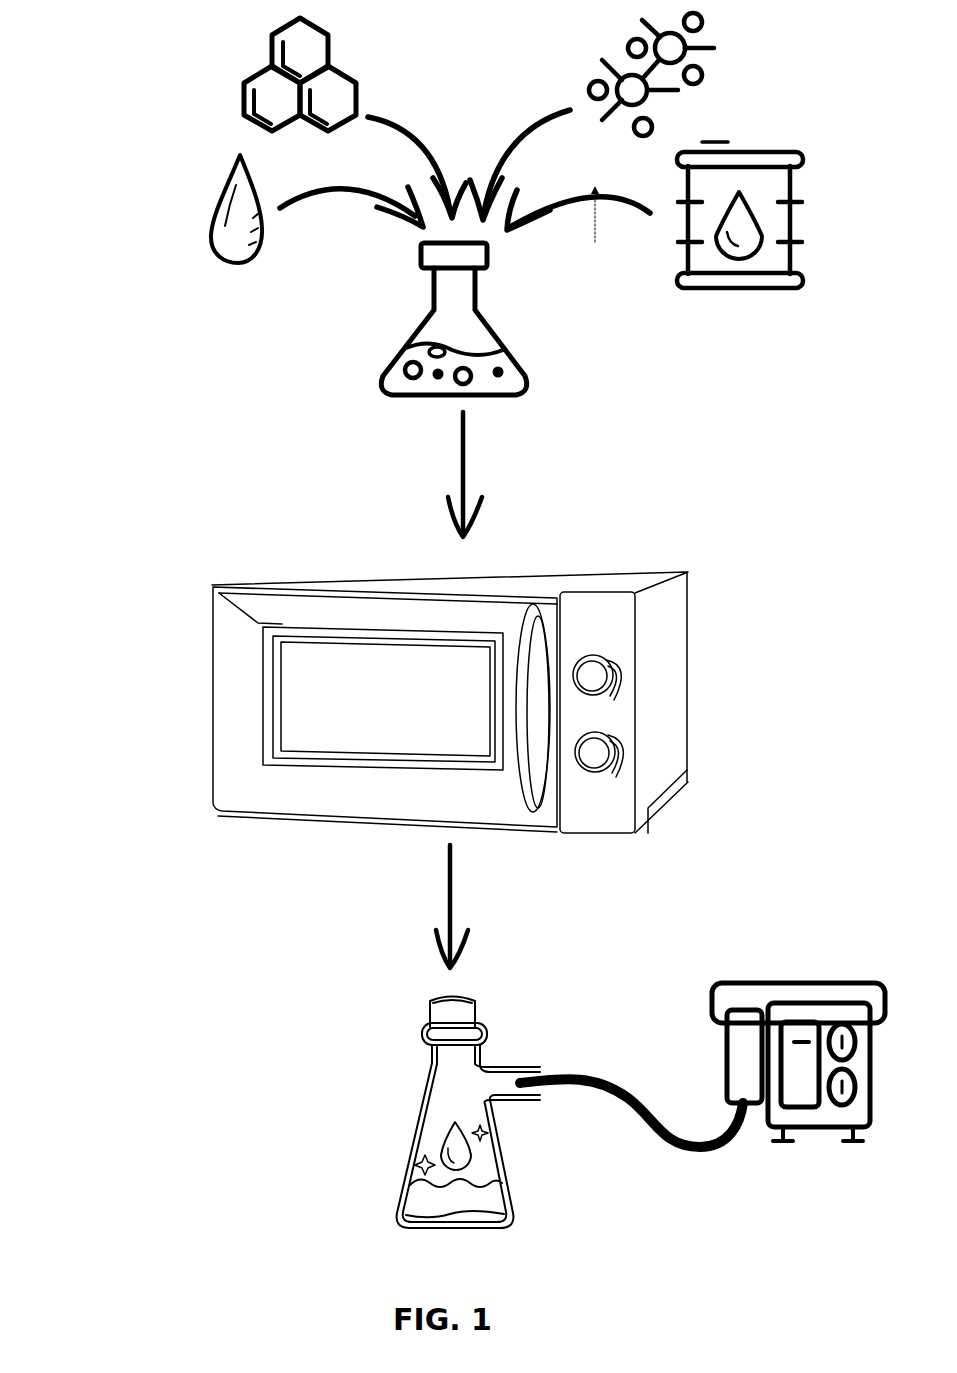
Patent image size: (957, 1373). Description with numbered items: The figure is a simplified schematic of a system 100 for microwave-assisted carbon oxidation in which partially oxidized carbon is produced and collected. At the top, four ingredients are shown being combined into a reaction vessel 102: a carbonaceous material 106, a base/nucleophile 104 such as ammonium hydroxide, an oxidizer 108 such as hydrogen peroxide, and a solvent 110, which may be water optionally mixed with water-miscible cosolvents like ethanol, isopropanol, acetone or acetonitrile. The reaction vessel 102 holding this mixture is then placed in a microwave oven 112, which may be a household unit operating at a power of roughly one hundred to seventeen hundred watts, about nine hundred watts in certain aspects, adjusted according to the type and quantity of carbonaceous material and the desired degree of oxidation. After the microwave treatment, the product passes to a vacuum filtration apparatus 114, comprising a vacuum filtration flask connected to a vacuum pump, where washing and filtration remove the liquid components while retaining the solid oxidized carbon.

The system 100 is at (82, 113).
The reaction vessel 102 is at (428, 305).
The base/nucleophile 104 is at (216, 210).
The carbonaceous material 106 is at (270, 70).
The oxidizer 108 is at (717, 48).
The solvent 110 is at (792, 182).
The microwave oven 112 is at (212, 647).
The vacuum filtration apparatus 114 is at (622, 988).